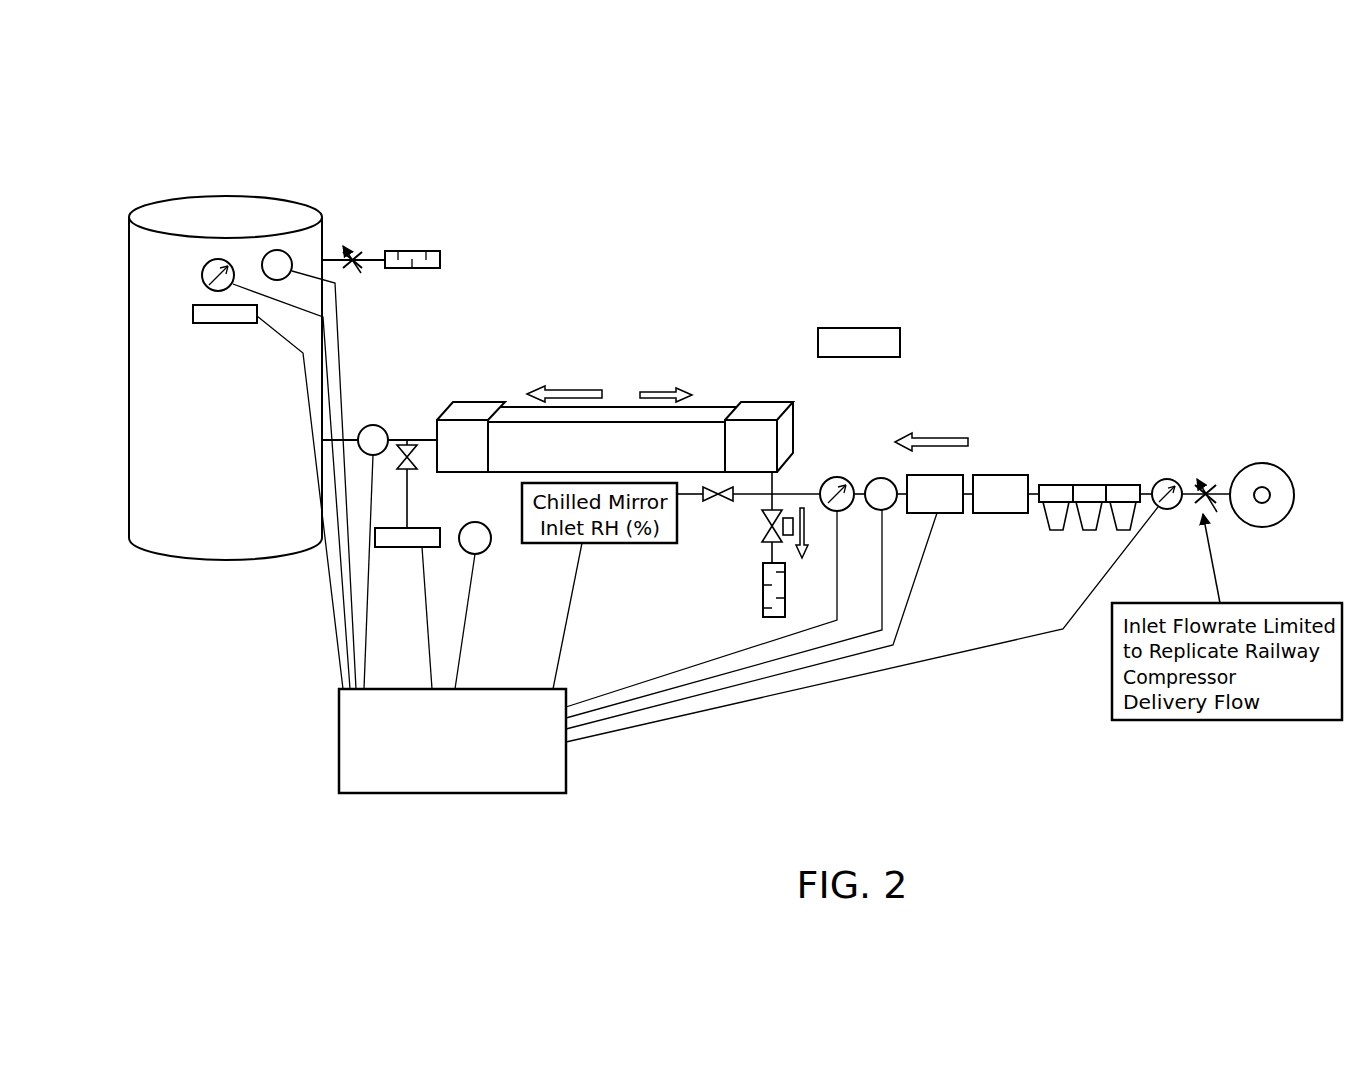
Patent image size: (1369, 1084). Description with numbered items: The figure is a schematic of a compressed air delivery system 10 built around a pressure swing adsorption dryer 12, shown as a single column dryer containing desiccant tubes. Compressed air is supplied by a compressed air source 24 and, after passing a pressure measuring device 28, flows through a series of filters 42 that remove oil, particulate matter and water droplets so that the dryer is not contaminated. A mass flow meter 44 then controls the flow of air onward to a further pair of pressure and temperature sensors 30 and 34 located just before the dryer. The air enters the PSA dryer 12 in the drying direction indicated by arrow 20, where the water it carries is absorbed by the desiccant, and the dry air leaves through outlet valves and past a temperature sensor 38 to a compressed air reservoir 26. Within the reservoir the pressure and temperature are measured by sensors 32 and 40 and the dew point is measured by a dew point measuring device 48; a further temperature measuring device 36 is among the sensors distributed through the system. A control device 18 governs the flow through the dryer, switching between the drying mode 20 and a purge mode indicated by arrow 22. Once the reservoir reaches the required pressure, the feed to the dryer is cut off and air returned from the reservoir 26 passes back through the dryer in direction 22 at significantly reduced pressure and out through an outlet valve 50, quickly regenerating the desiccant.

The compressed air delivery system 10 is at (1042, 350).
The pressure swing adsorption (PSA) dryer 12 is at (628, 442).
The control device 18 is at (445, 758).
The drying mode directional arrow 20 is at (572, 388).
The purge mode arrow 22 is at (660, 388).
The compressed air source 24 is at (1260, 463).
The compressed air reservoir 26 is at (223, 492).
The pressure measuring device 28 is at (1162, 478).
The pressure measuring device 30 is at (840, 477).
The pressure measuring device 32 is at (218, 258).
The temperature measuring device 34 is at (883, 478).
The temperature measuring device 36 is at (491, 540).
The temperature measuring device 38 is at (373, 425).
The temperature measuring device 40 is at (282, 250).
The filters 42 is at (1080, 465).
The mass flow meter 44 is at (943, 497).
The dew point measuring device 48 is at (210, 312).
The outlet valve 50 is at (763, 527).